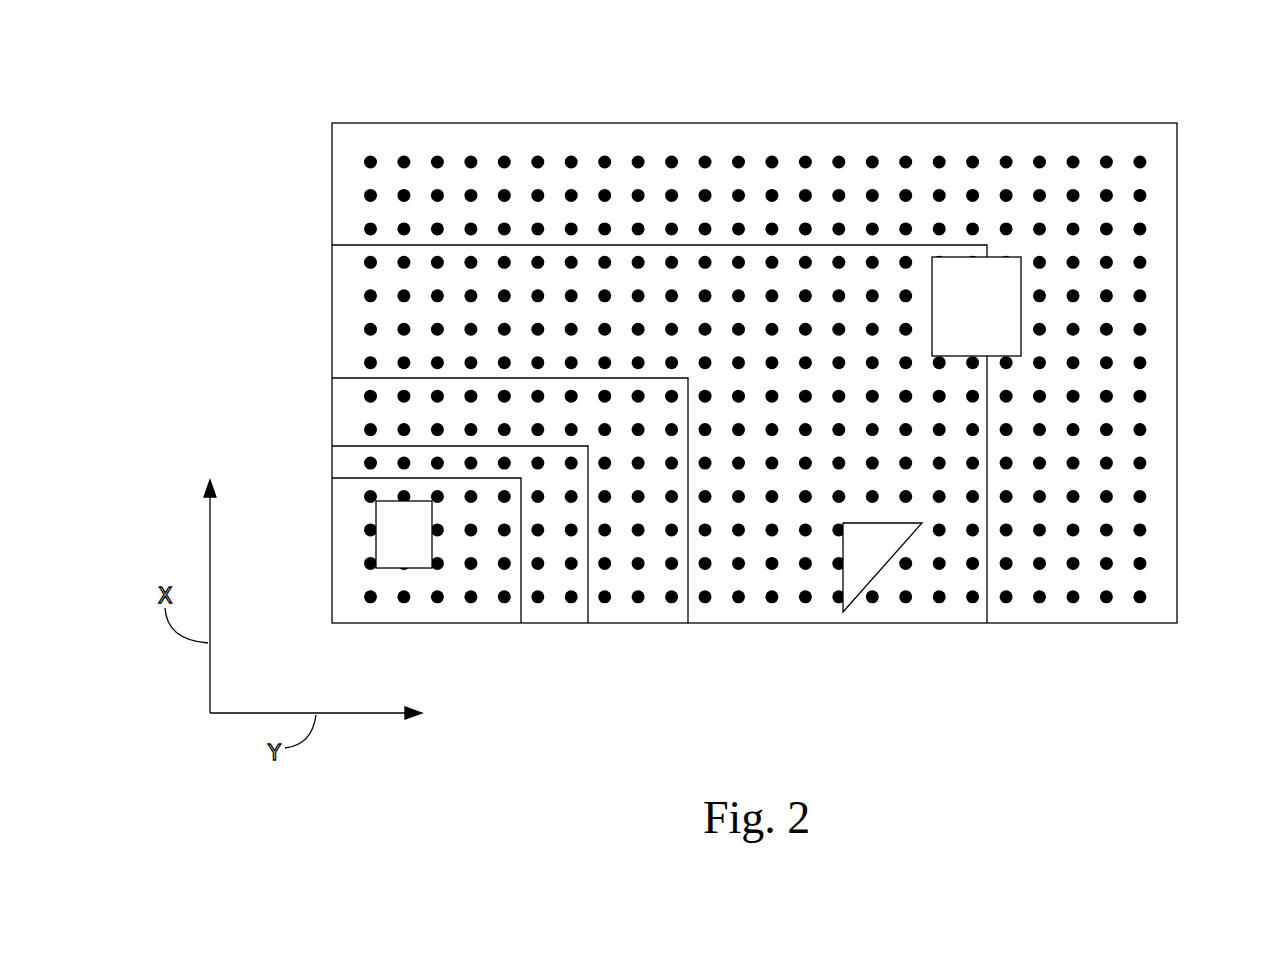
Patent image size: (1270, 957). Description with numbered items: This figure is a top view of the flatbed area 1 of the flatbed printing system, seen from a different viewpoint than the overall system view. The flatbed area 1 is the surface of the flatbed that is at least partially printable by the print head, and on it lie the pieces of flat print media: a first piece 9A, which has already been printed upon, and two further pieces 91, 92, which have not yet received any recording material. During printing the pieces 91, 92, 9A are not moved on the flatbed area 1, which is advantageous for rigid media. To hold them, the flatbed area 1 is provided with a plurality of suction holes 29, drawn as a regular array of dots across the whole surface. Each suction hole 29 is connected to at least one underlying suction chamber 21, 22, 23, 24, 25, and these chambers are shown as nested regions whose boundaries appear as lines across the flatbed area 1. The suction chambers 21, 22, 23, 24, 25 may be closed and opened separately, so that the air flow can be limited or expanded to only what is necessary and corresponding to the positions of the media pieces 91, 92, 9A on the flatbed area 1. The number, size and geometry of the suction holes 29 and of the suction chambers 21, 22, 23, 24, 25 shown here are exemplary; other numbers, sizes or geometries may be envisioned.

The flatbed area 1 is at (1112, 123).
The suction hole 29 is at (404, 156).
The suction chamber 21 is at (431, 613).
The suction chamber 22 is at (563, 613).
The suction chamber 23 is at (653, 613).
The suction chamber 24 is at (863, 613).
The suction chamber 25 is at (1099, 613).
The first piece of media 9A is at (376, 548).
The piece of media 91 is at (843, 547).
The piece of media 92 is at (1021, 285).